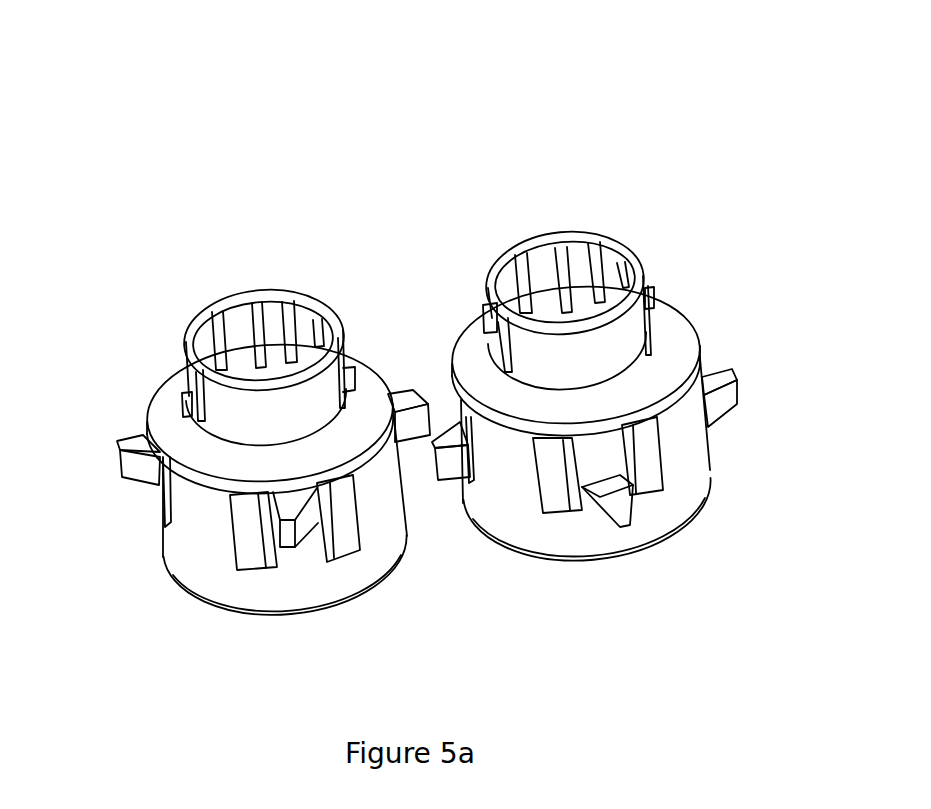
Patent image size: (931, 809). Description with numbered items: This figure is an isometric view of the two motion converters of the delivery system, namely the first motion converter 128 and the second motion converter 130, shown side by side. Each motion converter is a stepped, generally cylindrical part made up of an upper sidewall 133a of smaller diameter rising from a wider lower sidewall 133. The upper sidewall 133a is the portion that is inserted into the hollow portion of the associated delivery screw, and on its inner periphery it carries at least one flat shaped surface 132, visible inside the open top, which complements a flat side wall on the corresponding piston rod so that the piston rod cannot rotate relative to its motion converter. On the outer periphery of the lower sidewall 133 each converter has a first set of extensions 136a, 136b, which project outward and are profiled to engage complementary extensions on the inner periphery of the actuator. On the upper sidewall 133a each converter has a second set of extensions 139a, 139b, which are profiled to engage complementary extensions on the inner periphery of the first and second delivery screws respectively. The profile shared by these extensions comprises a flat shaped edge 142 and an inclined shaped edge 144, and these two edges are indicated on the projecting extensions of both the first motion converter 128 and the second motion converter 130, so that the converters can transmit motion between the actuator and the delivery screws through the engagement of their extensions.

The first motion converter 128 is at (186, 187).
The second motion converter 130 is at (561, 118).
The flat shaped surface 132 is at (265, 313).
The lower sidewall 133 is at (537, 537).
The upper sidewall 133a is at (240, 425).
The first set of extensions of the first motion converter 136a is at (412, 392).
The first set of extensions of the second motion converter 136b is at (742, 405).
The second set of extensions of the first motion converter 139a is at (180, 390).
The second set of extensions of the second motion converter 139b is at (648, 292).
The flat shaped edge 142 is at (143, 434).
The inclined shaped edge 144 is at (148, 470).